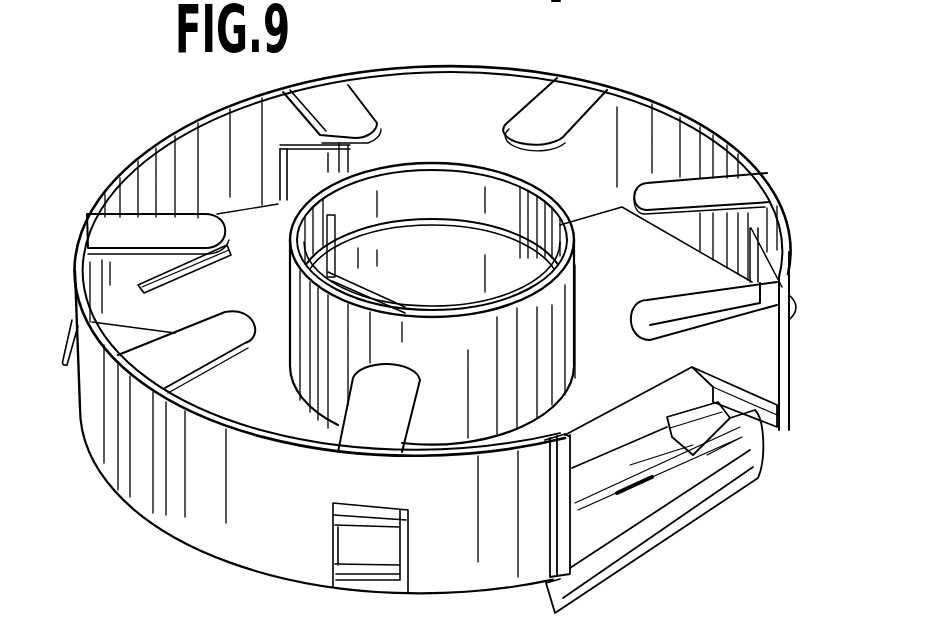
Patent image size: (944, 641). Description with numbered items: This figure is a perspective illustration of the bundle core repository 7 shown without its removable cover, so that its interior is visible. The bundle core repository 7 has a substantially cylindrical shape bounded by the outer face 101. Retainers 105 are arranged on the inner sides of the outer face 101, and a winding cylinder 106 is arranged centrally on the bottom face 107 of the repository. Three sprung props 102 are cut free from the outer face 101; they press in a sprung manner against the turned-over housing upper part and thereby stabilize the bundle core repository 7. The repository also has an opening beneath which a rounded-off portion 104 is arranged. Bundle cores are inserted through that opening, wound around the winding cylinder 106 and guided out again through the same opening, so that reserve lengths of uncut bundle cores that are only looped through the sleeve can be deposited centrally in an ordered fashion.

The bundle core repository 7 is at (672, 90).
The outer face 101 is at (166, 137).
The sprung prop 102 is at (378, 548).
The rounded-off portion 104 is at (672, 508).
The retainer 105 is at (312, 103).
The winding cylinder 106 is at (308, 312).
The bottom face 107 is at (643, 372).